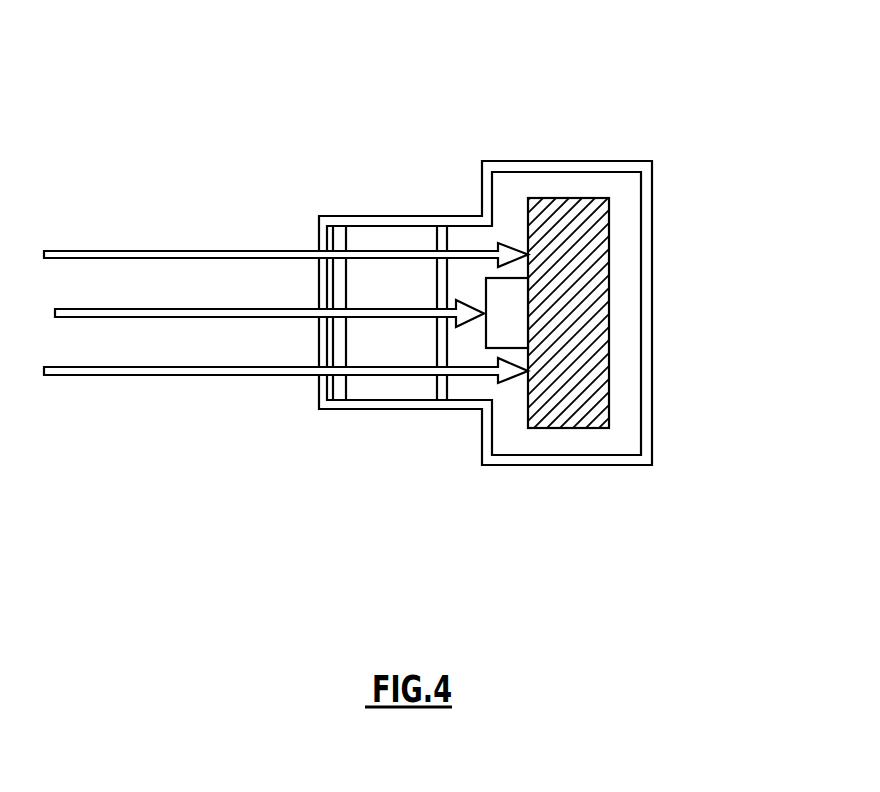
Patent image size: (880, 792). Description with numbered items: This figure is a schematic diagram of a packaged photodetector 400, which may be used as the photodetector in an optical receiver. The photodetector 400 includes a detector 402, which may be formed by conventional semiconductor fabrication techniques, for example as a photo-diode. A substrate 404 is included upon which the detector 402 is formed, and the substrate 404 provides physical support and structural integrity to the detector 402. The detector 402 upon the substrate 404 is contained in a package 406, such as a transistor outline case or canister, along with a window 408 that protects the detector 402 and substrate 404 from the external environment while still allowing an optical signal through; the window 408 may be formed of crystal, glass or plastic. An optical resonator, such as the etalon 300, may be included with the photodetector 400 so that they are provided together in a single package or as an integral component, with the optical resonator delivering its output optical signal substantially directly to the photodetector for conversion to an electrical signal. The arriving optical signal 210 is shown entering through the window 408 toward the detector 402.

The packaged photodetector 400 is at (88, 57).
The light beams 210 is at (121, 394).
The etalon 300 is at (396, 224).
The detector 402 is at (542, 302).
The substrate 404 is at (592, 380).
The package 406 is at (485, 357).
The window 408 is at (311, 278).